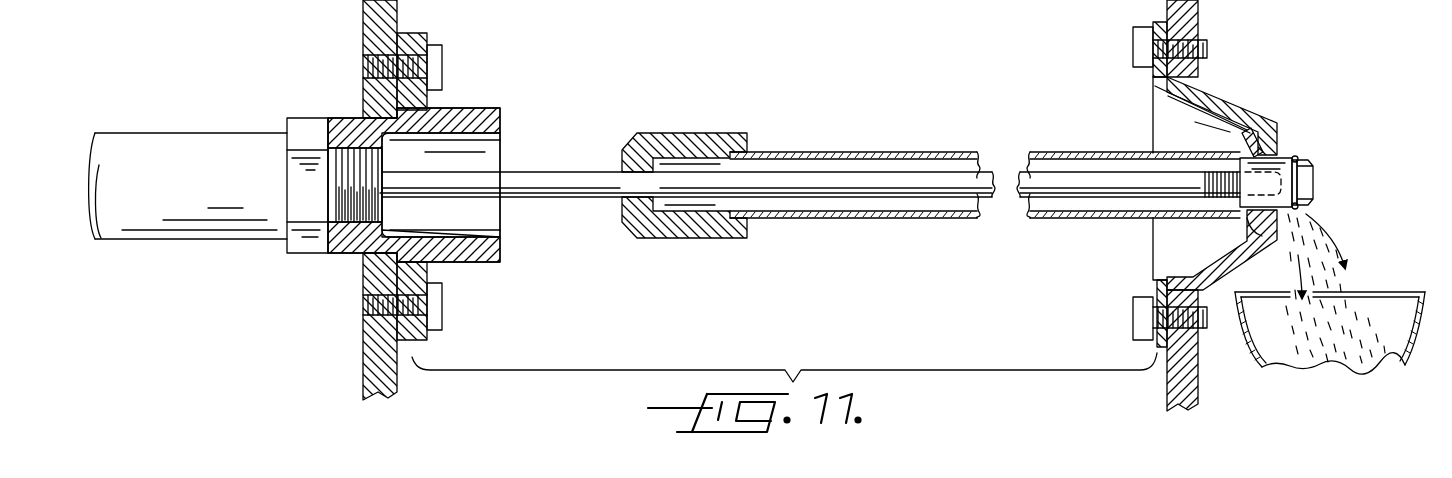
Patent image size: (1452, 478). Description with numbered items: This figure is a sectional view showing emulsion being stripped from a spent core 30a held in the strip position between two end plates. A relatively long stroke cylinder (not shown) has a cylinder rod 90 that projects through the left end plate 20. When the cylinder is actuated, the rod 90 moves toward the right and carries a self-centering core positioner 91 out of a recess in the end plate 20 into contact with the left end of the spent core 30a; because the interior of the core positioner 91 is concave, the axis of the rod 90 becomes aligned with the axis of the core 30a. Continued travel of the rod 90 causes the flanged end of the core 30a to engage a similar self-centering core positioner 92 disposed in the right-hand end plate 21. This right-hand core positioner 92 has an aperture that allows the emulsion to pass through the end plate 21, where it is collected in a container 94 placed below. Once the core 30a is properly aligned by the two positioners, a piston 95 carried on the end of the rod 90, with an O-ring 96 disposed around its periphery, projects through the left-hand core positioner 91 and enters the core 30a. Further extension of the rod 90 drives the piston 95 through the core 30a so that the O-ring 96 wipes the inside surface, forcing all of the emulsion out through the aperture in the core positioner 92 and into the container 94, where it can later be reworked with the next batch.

The left end plate 20 is at (365, 374).
The right-hand end plate 21 is at (1200, 385).
The core 30a is at (1062, 152).
The cylinder rod 90 is at (540, 172).
The self-centering core positioner 91 is at (683, 133).
The self-centering core positioner 92 is at (1237, 101).
The container 94 is at (1432, 272).
The piston 95 is at (1284, 157).
The O-ring 96 is at (1302, 154).